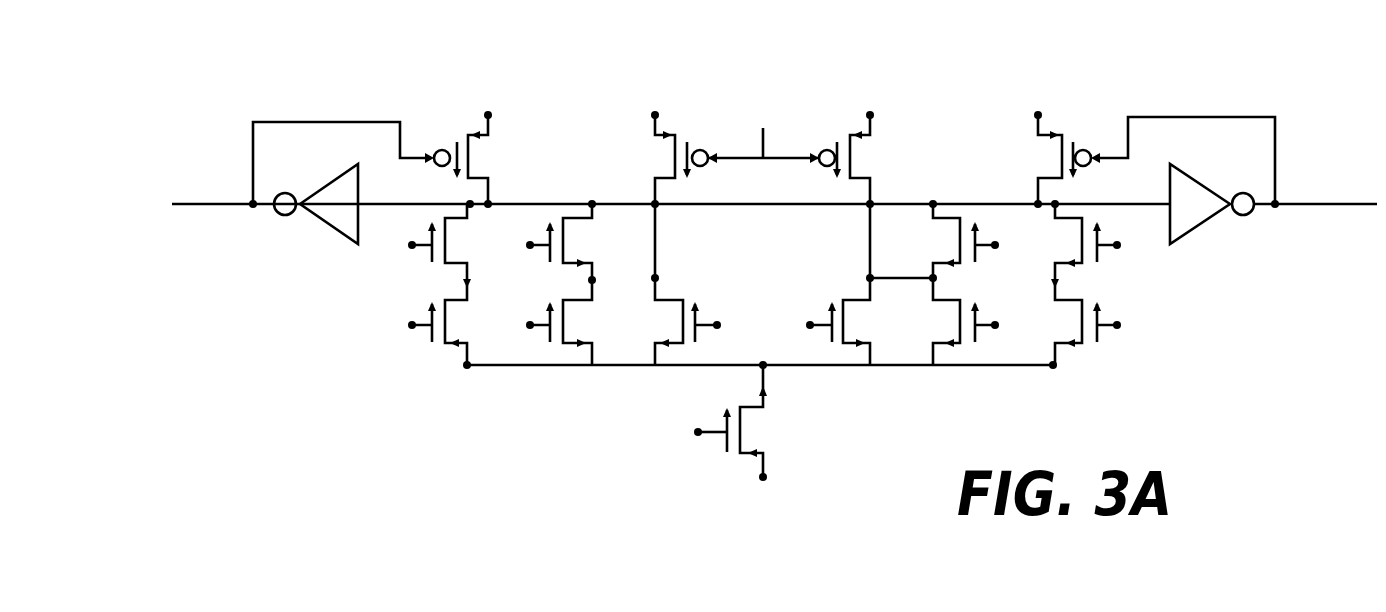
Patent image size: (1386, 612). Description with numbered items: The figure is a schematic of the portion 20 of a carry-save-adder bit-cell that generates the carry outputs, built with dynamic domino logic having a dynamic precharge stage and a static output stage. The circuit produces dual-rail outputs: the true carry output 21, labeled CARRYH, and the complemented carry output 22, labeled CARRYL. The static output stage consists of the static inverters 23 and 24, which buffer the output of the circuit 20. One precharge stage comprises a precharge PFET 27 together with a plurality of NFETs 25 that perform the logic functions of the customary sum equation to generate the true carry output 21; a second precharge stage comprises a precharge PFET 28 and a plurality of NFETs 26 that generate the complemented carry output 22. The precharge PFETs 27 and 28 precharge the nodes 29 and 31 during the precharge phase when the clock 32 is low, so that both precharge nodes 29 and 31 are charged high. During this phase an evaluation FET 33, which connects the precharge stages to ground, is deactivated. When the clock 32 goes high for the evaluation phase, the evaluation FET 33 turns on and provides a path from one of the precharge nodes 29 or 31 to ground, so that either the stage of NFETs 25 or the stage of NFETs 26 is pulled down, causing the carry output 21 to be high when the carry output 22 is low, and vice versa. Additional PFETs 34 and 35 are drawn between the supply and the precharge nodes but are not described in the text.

The portion of the CSA bit-cell that generates the carry outputs 20 is at (1274, 60).
The true carry output 21 is at (202, 207).
The complemented carry output 22 is at (1323, 205).
The static inverter 23 is at (331, 228).
The static inverter 24 is at (1198, 223).
The NFETs 25 is at (432, 298).
The NFETs 26 is at (947, 243).
The precharge PFET 27 is at (663, 160).
The precharge PFET 28 is at (865, 155).
The precharge node 29 is at (385, 197).
The precharge node 31 is at (1144, 197).
The clock 32 is at (756, 96).
The evaluation FET 33 is at (753, 427).
The keeper PMOS transistor 34 is at (485, 158).
The keeper PMOS transistor 35 is at (1042, 161).